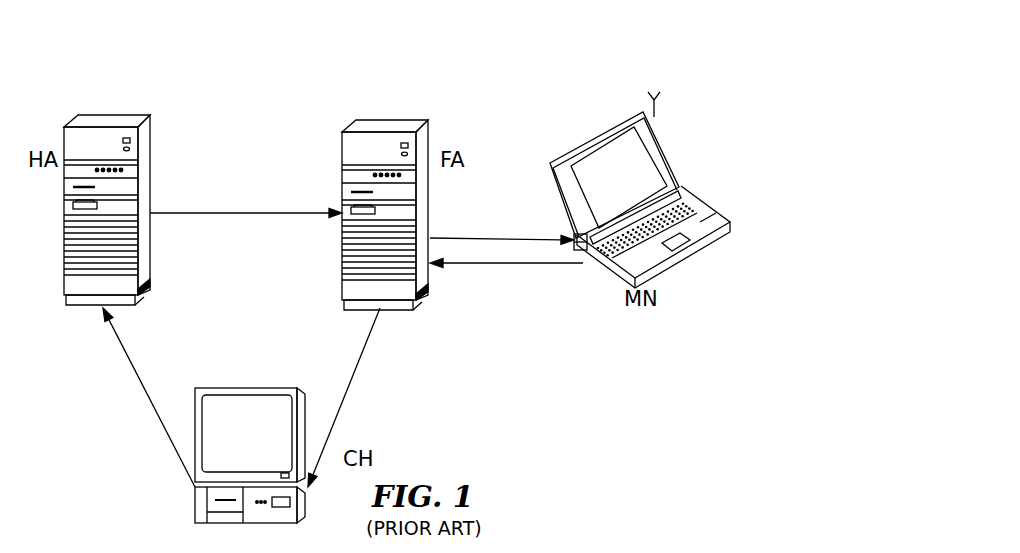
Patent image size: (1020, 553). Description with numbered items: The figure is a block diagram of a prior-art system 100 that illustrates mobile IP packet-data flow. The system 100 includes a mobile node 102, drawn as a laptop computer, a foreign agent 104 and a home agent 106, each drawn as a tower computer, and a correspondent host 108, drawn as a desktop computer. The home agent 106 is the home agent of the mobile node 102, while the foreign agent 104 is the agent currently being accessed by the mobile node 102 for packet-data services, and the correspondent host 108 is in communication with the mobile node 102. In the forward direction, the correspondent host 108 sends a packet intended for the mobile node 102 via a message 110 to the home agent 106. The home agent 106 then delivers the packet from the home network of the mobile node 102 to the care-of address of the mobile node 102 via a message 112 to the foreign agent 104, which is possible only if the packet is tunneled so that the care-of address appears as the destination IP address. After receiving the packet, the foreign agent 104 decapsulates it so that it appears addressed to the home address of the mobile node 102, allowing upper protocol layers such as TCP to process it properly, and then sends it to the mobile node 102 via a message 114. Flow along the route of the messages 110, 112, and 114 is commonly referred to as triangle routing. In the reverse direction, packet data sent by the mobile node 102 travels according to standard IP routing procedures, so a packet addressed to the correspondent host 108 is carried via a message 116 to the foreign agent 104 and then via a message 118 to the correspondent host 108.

The system 100 is at (594, 66).
The mobile node 102 is at (663, 272).
The foreign agent 104 is at (342, 155).
The home agent 106 is at (152, 172).
The correspondent host 108 is at (193, 513).
The message 110 is at (137, 387).
The message 112 is at (237, 215).
The message 114 is at (482, 238).
The message 116 is at (490, 263).
The message 118 is at (358, 365).